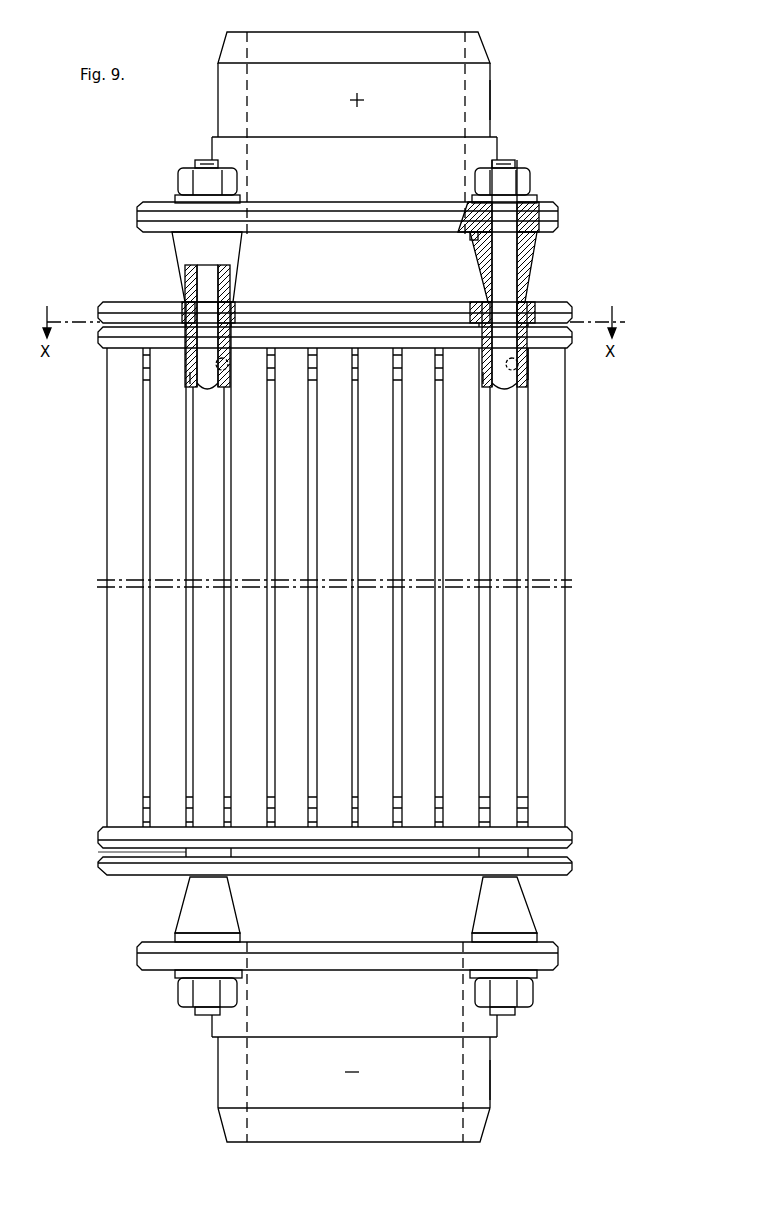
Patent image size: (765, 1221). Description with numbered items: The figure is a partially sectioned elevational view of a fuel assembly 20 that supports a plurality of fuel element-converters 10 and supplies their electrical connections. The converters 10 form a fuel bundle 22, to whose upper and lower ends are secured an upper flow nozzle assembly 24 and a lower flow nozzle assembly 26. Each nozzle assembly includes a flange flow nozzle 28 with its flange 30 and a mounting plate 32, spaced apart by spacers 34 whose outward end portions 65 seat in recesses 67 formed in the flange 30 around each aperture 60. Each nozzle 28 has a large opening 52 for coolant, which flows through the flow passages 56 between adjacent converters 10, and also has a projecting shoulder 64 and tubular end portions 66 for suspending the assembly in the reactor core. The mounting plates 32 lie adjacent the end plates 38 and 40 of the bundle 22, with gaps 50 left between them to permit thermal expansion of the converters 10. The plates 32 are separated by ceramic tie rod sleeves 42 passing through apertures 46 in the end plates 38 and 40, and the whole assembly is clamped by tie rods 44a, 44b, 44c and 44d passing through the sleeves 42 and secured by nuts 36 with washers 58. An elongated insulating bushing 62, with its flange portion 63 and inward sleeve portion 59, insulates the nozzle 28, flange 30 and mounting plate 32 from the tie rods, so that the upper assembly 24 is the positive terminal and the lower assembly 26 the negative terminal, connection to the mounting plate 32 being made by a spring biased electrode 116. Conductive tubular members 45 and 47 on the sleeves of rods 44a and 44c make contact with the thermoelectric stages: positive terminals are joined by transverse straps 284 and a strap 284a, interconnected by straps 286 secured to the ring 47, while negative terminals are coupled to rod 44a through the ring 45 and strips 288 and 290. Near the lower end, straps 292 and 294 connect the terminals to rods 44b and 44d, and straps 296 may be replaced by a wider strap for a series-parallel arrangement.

The fuel element-converter 10 is at (162, 550).
The fuel assembly 20 is at (598, 278).
The fuel bundle 22 is at (603, 410).
The upper flow nozzle assembly 24 is at (490, 90).
The lower flow nozzle assembly 26 is at (222, 1120).
The flange flow nozzle 28 is at (372, 55).
The nozzle flange 30 is at (558, 215).
The mounting plate 32 is at (565, 305).
The spacer 34 is at (530, 262).
The nut 36 is at (532, 186).
The upper end plate 38 is at (548, 340).
The lower end plate 40 is at (570, 835).
The tie rod sleeve 42 is at (230, 362).
The tie rod 44a is at (205, 160).
The tie rod 44b is at (198, 164).
The tie rod 44c is at (512, 160).
The tie rod 44d is at (520, 163).
The conductive tubular member 45 is at (207, 390).
The aperture 46 is at (482, 348).
The conductive ring 47 is at (503, 587).
The gap 50 is at (572, 852).
The opening 52 is at (249, 103).
The flow passage 56 is at (480, 655).
The washer 58 is at (182, 985).
The inward sleeve portion 59 is at (526, 305).
The aperture 60 is at (463, 208).
The insulating bushing 62 is at (483, 250).
The flange portion 63 is at (538, 200).
The shoulder 64 is at (500, 148).
The outward end portion 65 is at (535, 245).
The tubular end portion 66 is at (480, 78).
The recess 67 is at (470, 236).
The spring biased electrode 116 is at (285, 322).
The elongated strap 284 is at (356, 348).
The strap 284a is at (530, 355).
The strap 286 is at (480, 375).
The transverse conductive strip 288 is at (400, 348).
The radial conductive strip 290 is at (190, 380).
The conductive strap 292 is at (395, 792).
The conductive strap 294 is at (397, 815).
The strap 296 is at (485, 805).